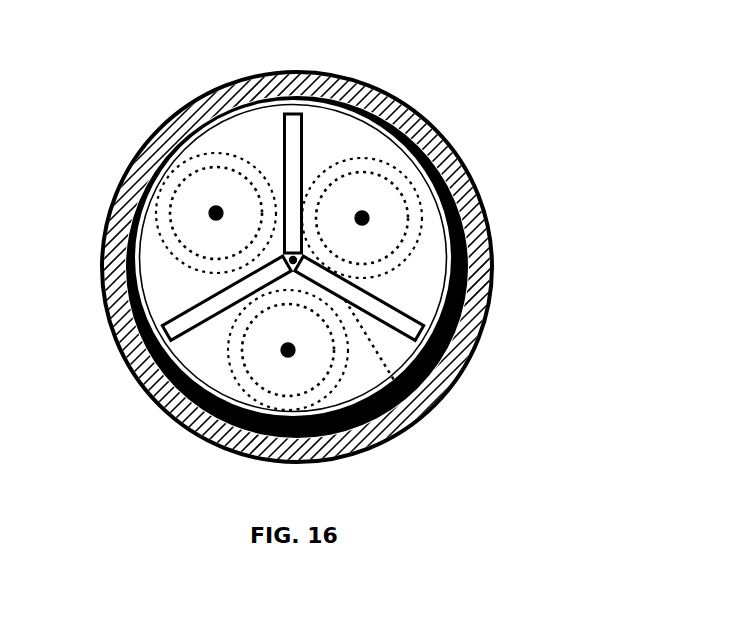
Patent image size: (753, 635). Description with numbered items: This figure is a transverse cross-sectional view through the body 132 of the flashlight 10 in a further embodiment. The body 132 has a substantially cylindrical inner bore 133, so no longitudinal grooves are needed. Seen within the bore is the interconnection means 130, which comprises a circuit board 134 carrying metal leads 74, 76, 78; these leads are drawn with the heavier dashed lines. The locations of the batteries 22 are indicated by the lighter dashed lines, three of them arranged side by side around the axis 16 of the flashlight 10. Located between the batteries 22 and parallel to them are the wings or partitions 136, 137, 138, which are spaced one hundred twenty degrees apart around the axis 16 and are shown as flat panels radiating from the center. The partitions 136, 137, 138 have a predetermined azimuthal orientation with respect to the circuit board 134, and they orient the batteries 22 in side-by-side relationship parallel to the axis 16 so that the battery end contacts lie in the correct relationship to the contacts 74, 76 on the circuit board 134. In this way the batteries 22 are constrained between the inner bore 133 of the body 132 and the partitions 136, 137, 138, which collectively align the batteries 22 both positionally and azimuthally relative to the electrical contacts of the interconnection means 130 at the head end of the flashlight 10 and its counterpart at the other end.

The flashlight 10 is at (428, 474).
The interconnection means 130 is at (505, 390).
The body 132 is at (470, 180).
The inner bore 133 is at (440, 133).
The circuit board 134 is at (440, 273).
The partition 136 is at (303, 133).
The partition 137 is at (432, 318).
The partition 138 is at (170, 310).
The axis 16 is at (293, 272).
The battery 22 is at (203, 150).
The metal lead 74 is at (283, 385).
The metal lead 76 is at (400, 230).
The metal lead 78 is at (457, 380).